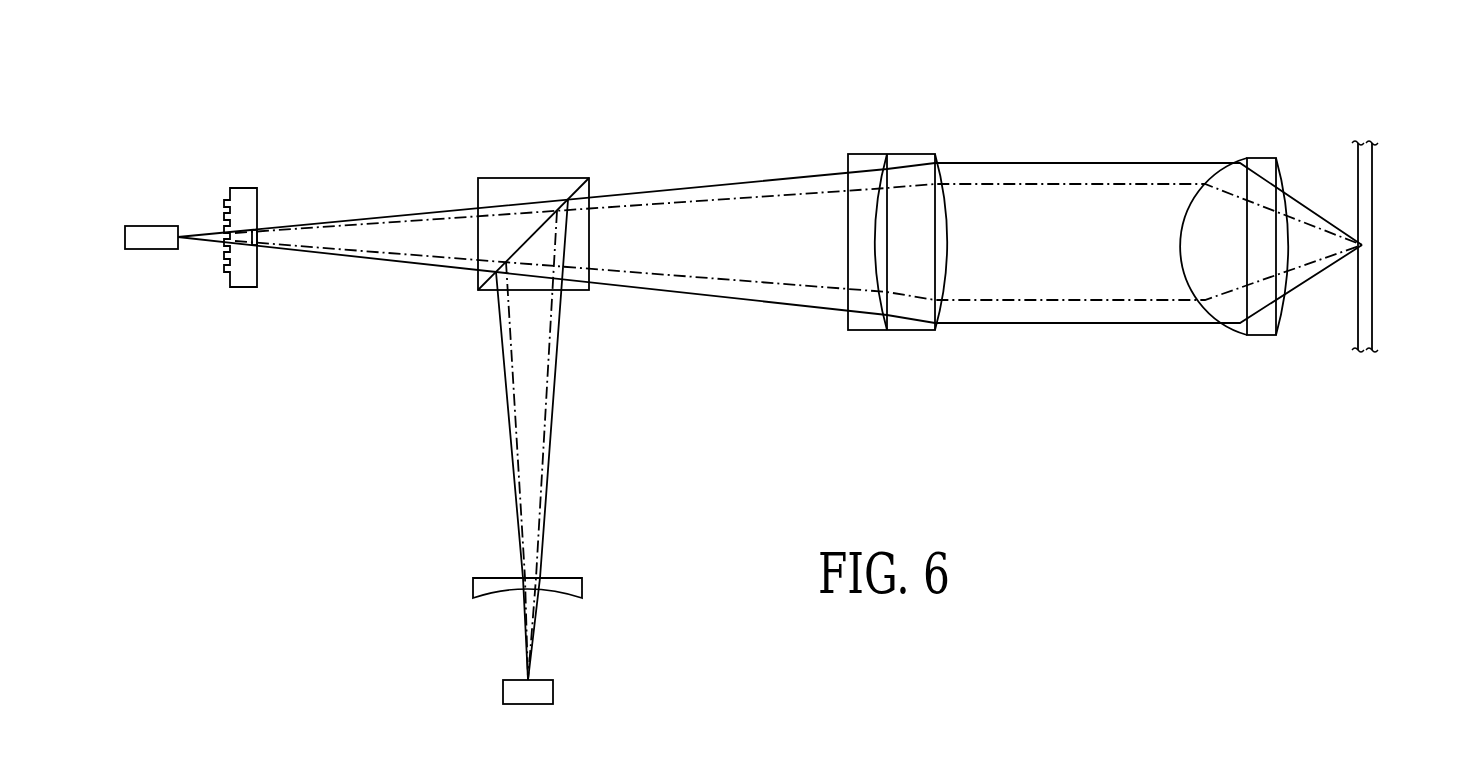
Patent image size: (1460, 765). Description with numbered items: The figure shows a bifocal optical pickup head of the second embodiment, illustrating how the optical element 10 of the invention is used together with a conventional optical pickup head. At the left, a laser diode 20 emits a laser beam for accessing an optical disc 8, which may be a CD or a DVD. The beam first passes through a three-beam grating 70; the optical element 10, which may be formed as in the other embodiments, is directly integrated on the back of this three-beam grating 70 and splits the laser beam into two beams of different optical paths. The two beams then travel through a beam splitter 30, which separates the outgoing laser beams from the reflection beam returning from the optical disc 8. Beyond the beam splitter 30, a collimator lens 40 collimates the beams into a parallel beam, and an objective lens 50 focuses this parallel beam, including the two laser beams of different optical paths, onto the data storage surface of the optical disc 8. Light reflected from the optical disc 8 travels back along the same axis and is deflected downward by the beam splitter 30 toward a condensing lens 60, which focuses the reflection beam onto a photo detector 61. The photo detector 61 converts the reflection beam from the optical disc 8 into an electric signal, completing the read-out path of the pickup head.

The optical disc 8 is at (1371, 192).
The optical element 10 is at (261, 236).
The laser diode 20 is at (141, 227).
The beam splitter 30 is at (536, 234).
The collimator lens 40 is at (869, 155).
The objective lens 50 is at (1264, 159).
The condensing lens 60 is at (571, 577).
The photo detector 61 is at (502, 688).
The three-beam grating 70 is at (243, 187).